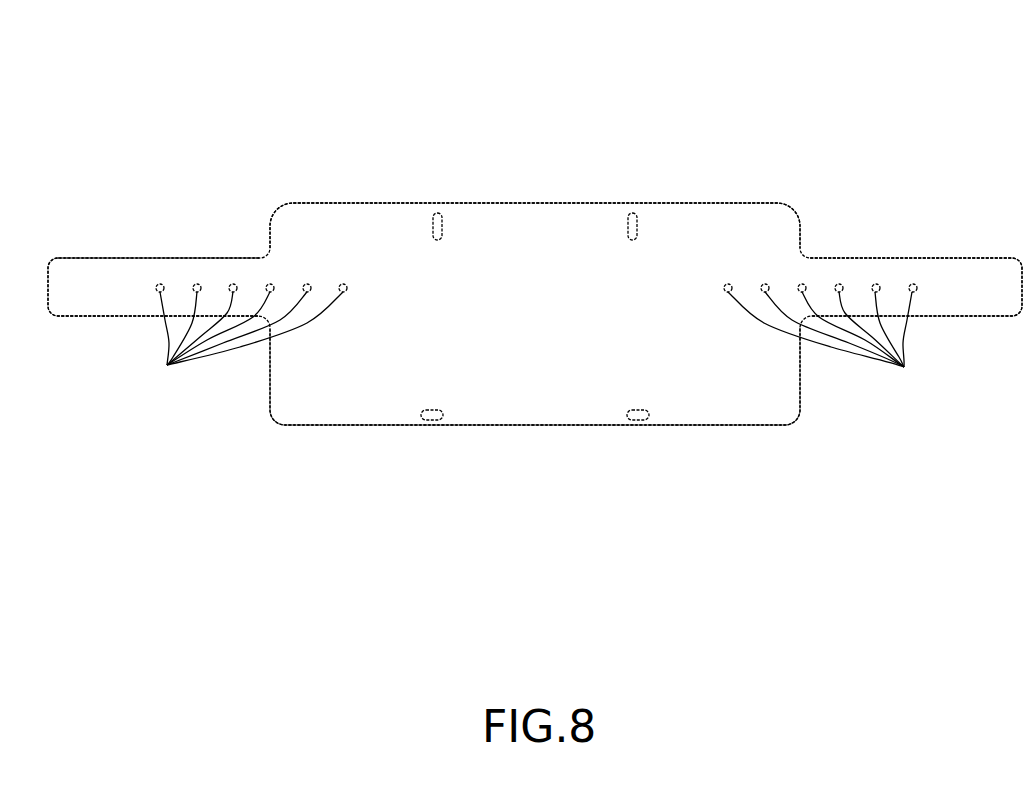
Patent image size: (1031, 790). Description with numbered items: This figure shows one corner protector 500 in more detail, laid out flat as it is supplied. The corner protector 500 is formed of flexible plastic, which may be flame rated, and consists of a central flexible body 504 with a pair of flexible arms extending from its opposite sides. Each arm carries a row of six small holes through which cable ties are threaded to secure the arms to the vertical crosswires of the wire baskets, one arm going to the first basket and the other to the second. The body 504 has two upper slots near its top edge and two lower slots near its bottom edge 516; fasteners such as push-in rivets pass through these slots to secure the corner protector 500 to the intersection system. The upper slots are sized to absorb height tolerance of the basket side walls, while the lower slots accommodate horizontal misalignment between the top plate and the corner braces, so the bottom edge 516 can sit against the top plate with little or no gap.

The corner protector 500 is at (810, 123).
The flexible body 504 is at (329, 218).
The bottom edge 516 is at (318, 427).